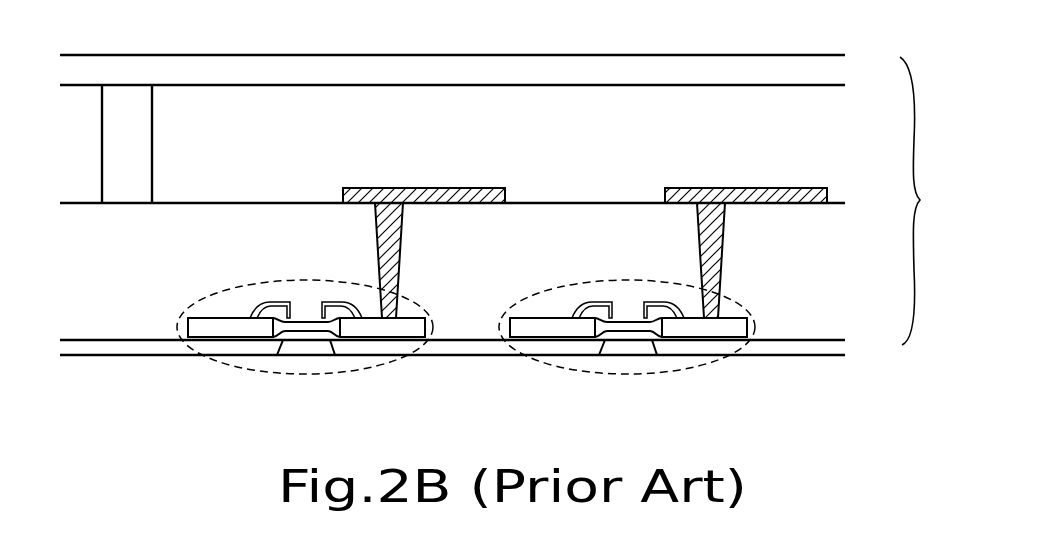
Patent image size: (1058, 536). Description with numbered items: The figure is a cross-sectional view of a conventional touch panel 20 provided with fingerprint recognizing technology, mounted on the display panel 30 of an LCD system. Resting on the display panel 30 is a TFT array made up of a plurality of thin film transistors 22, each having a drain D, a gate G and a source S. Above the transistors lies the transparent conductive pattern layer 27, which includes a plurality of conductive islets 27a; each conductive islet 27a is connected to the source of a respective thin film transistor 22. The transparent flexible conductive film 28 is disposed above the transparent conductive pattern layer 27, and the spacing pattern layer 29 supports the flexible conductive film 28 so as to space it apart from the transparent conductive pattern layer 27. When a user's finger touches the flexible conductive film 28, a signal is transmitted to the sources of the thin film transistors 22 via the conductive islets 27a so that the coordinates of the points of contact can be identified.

The transparent flexible conductive film 28 is at (577, 58).
The spacing pattern layer 29 is at (140, 161).
The transparent conductive pattern layer 27 is at (828, 192).
The conductive islet 27a is at (423, 200).
The thin film transistor 22 is at (303, 374).
The display panel 30 is at (816, 429).
The touch panel 20 is at (928, 201).